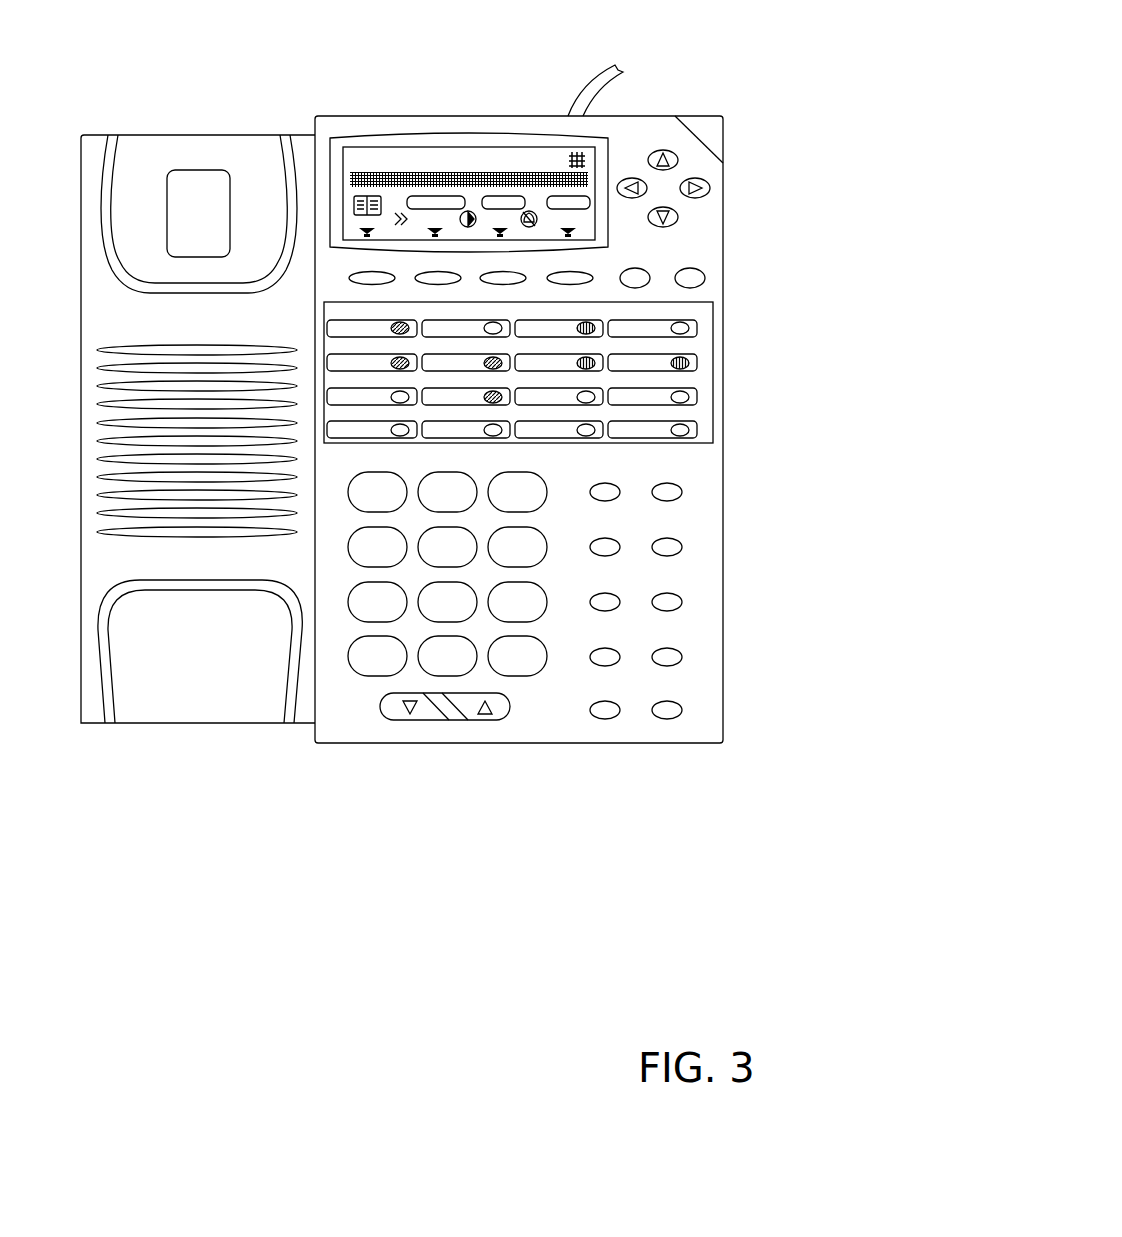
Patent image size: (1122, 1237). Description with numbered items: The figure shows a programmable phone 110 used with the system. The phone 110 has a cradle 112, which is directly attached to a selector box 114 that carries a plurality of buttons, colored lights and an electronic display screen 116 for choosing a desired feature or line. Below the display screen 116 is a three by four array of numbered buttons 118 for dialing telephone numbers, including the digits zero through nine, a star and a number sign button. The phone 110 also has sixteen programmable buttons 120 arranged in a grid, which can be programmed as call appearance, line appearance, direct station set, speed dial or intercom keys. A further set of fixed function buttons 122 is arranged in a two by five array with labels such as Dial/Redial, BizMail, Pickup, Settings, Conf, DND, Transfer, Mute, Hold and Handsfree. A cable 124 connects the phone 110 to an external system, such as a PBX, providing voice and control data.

The phone 110 is at (235, 830).
The cradle 112 is at (133, 723).
The selector box 114 is at (640, 743).
The electronic display screen 116 is at (383, 152).
The numbered buttons 118 is at (383, 670).
The programmable buttons 120 is at (723, 443).
The fixed function buttons 122 is at (723, 482).
The cable 124 is at (618, 62).